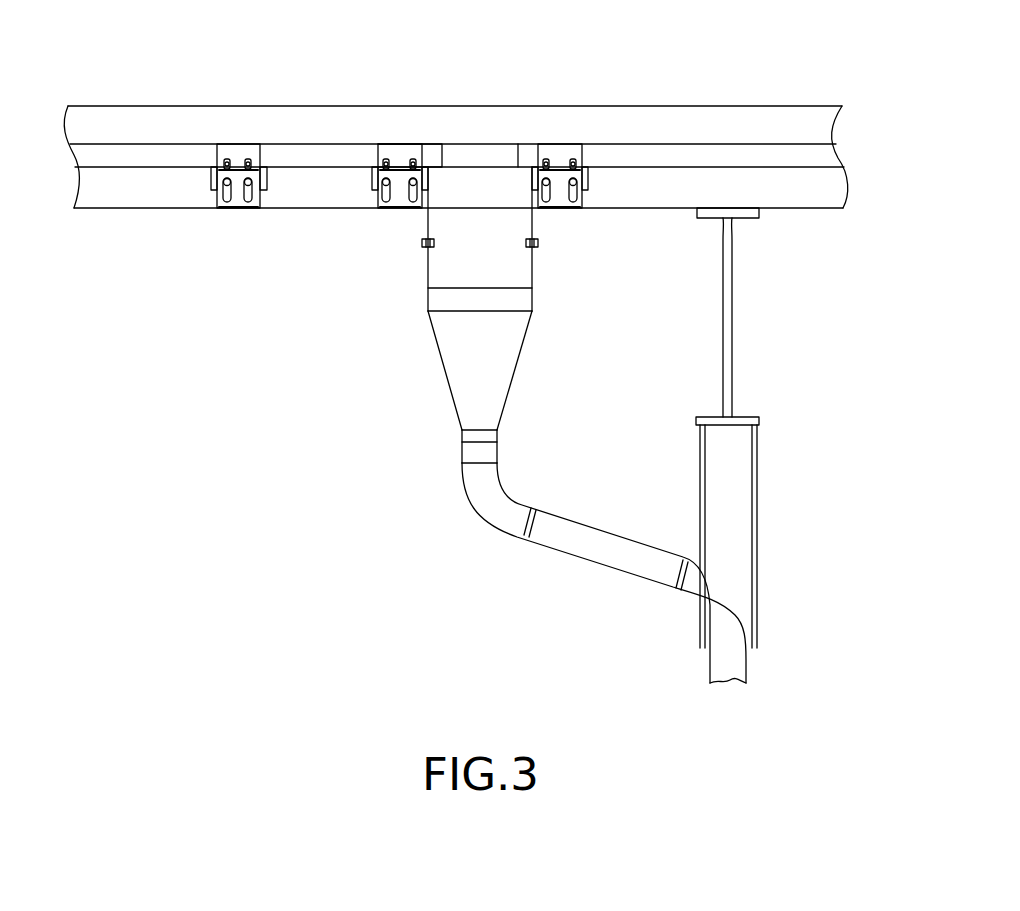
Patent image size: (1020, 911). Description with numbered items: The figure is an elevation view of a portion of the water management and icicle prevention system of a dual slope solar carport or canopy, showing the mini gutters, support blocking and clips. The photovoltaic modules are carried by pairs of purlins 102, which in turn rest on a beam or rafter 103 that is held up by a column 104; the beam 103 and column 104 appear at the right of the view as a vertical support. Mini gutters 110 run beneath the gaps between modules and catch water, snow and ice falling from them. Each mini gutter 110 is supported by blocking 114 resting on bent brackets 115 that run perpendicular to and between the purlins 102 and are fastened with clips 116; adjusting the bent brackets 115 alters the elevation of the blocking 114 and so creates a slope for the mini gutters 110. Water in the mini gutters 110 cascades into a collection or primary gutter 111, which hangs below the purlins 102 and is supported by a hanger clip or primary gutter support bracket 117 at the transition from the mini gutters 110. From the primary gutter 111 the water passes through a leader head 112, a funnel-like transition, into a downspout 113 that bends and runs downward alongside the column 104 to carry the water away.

The purlins 102 is at (602, 104).
The beam or rafter 103 is at (734, 316).
The column 104 is at (734, 523).
The mini gutter 110 is at (361, 146).
The primary gutter 111 is at (501, 282).
The leader head 112 is at (438, 364).
The downspout 113 is at (574, 559).
The blocking 114 is at (371, 191).
The bent bracket 115 is at (587, 206).
The clip 116 is at (402, 150).
The primary gutter support bracket 117 is at (425, 216).